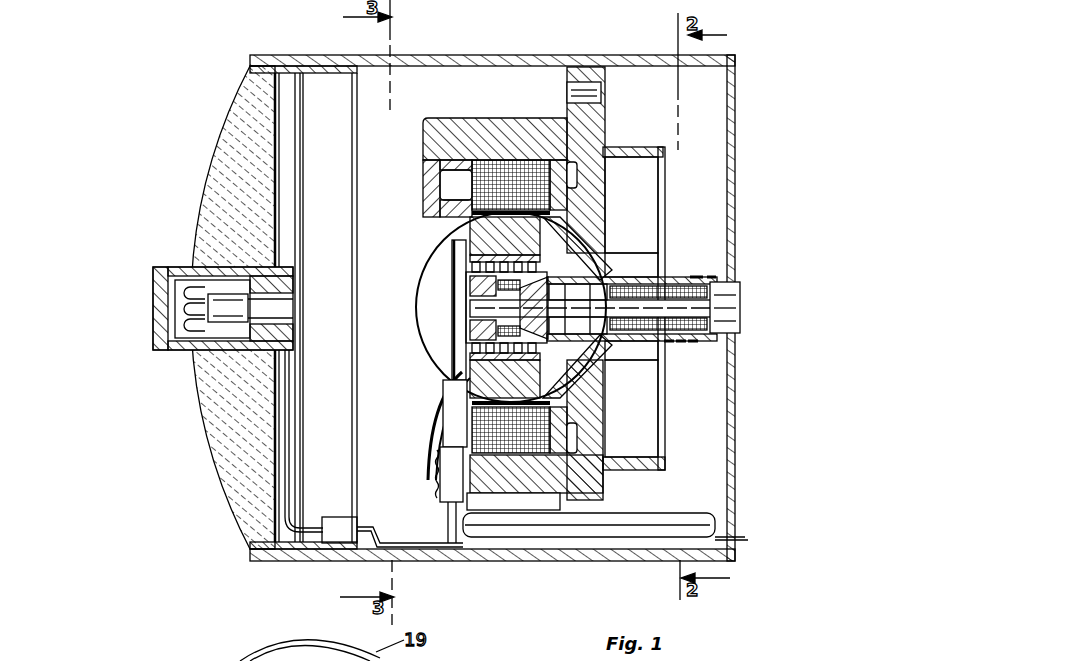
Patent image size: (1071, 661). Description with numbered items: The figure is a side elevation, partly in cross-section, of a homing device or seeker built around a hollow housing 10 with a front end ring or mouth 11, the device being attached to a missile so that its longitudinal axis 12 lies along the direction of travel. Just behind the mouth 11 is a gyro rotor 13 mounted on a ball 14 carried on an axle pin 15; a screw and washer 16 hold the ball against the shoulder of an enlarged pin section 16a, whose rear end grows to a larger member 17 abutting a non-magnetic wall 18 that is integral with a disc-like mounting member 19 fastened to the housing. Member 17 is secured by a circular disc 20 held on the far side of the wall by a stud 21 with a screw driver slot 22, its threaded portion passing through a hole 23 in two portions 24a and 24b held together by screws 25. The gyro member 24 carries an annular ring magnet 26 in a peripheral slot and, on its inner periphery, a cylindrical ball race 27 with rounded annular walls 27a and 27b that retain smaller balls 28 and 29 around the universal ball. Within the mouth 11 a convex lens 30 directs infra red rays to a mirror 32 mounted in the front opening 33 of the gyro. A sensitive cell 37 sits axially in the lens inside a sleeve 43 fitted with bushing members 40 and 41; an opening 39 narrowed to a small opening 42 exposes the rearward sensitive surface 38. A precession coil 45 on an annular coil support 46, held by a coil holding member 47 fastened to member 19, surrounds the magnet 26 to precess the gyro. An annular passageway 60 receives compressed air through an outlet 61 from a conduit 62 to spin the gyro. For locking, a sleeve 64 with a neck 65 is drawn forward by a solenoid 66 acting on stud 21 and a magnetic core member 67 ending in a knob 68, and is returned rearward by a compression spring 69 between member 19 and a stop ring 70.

The housing 10 is at (408, 55).
The front end ring or mouth 11 is at (268, 62).
The longitudinal axis 12 is at (145, 308).
The gyro rotor 13 is at (457, 380).
The ball 14 is at (470, 360).
The axle pin 15 is at (458, 324).
The screw and washer 16 is at (452, 312).
The enlarged pin section 16a is at (466, 276).
The enlarged rear member of pin 17 is at (598, 390).
The wall 18 is at (618, 352).
The disc-like mounting member 19 is at (590, 130).
The circular disc 20 is at (627, 247).
The stud 21 is at (640, 300).
The screw driver slot 22 is at (660, 342).
The hole 23 is at (643, 348).
The gyro member 24 is at (478, 222).
The first portion 24a is at (457, 240).
The second portion 24b is at (605, 240).
The screws 25 is at (588, 228).
The annular ring magnet 26 is at (580, 202).
The cylindrical ball race 27 is at (443, 173).
The rounded annular wall 27a is at (457, 195).
The rounded annular wall 27b is at (448, 160).
The balls 28 is at (470, 390).
The balls 29 is at (458, 420).
The lens 30 is at (193, 380).
The mirror 32 is at (455, 290).
The front opening 33 is at (462, 385).
The cell 37 is at (265, 230).
The sensitive surface 38 is at (268, 250).
The opening 39 is at (265, 258).
The bushing member 40 is at (262, 272).
The bushing member 41 is at (275, 268).
The small opening 42 is at (257, 302).
The sleeve 43 is at (190, 268).
The precession coil 45 is at (505, 165).
The annular coil support 46 is at (452, 158).
The coil holding member 47 is at (424, 122).
The annular passageway 60 is at (450, 447).
The outlet 61 is at (465, 512).
The conduit 62 is at (493, 523).
The sleeve 64 is at (670, 344).
The neck 65 is at (600, 418).
The solenoid 66 is at (683, 344).
The magnetic core member 67 is at (690, 344).
The knob of magnetic material 68 is at (742, 285).
The compression spring 69 is at (697, 272).
The stop or ring 70 is at (717, 272).